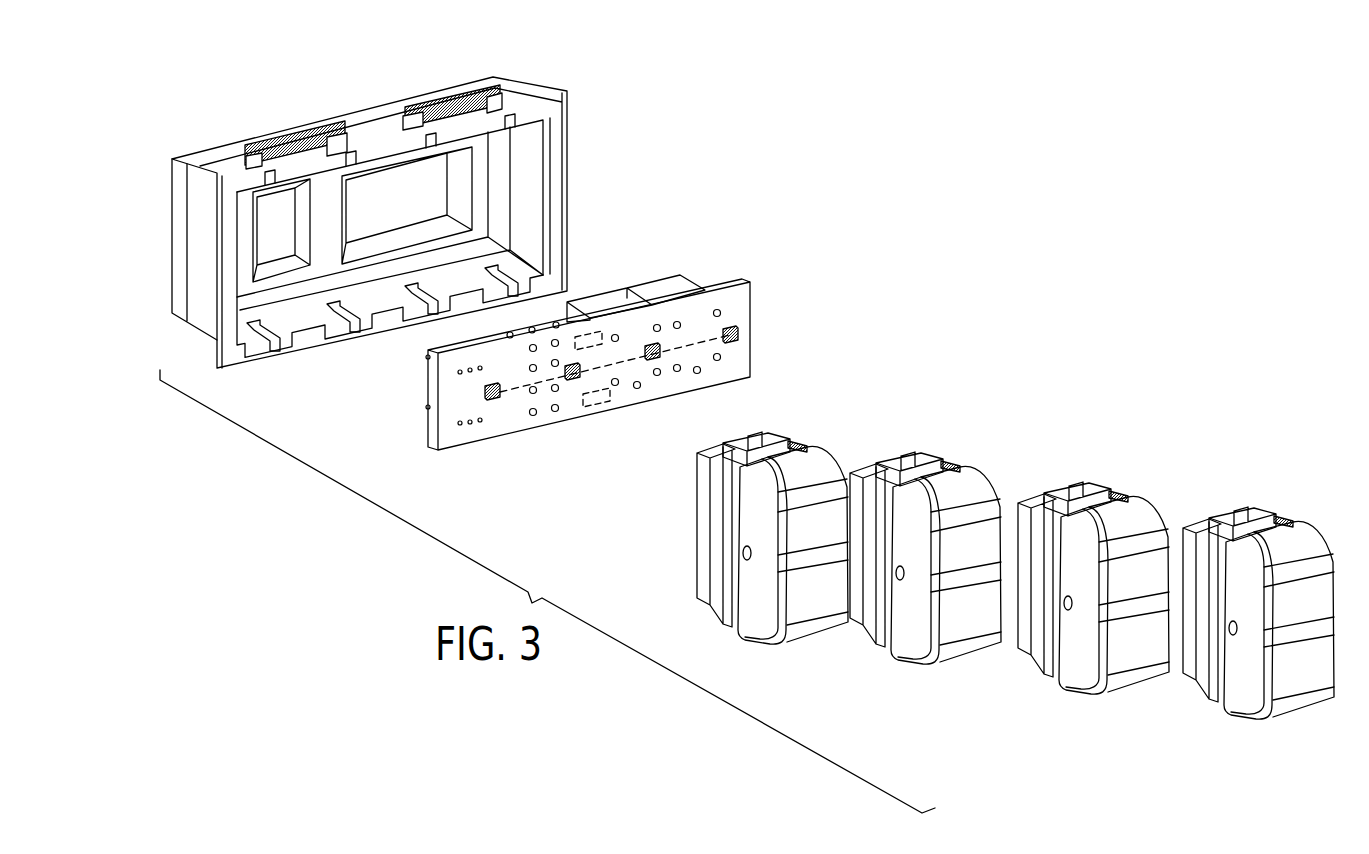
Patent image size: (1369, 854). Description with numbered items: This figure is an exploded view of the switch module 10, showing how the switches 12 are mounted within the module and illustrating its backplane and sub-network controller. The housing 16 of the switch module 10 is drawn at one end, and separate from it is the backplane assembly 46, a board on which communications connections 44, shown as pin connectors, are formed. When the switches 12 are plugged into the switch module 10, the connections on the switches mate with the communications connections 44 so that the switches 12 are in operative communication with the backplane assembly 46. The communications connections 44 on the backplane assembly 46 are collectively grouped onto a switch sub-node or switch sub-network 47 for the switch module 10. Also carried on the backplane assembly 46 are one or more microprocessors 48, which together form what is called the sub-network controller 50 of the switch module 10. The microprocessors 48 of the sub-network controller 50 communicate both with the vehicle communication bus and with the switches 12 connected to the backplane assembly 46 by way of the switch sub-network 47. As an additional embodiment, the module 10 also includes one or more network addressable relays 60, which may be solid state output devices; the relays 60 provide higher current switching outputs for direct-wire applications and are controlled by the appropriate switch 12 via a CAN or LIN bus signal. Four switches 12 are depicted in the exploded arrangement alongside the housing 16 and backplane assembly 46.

The switch module 10 is at (1036, 221).
The switches 12 is at (872, 473).
The housing 16 is at (410, 102).
The communications connections 44 is at (572, 381).
The backplane assembly 46 is at (470, 457).
The switch sub-network 47 is at (695, 329).
The microprocessors 48 is at (608, 394).
The sub-network controller 50 is at (620, 426).
The network addressable relays 60 is at (655, 288).